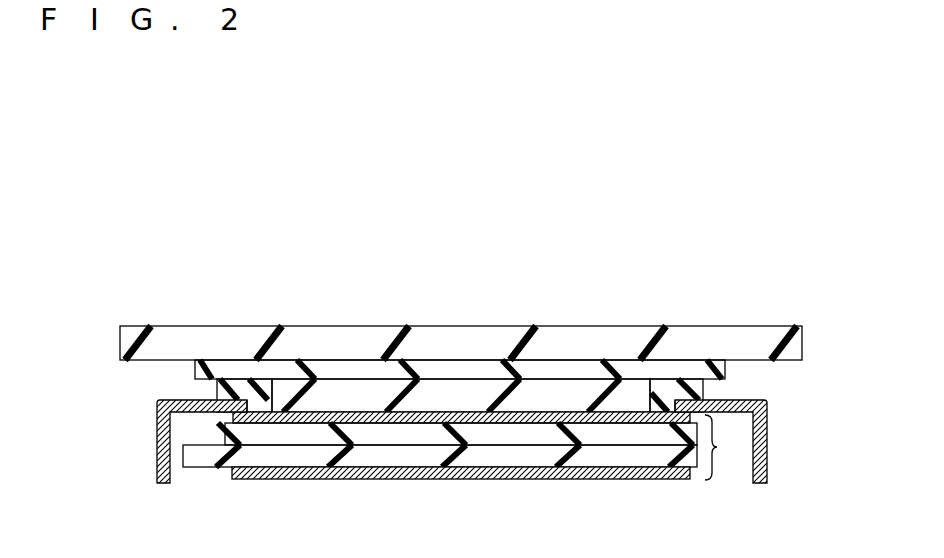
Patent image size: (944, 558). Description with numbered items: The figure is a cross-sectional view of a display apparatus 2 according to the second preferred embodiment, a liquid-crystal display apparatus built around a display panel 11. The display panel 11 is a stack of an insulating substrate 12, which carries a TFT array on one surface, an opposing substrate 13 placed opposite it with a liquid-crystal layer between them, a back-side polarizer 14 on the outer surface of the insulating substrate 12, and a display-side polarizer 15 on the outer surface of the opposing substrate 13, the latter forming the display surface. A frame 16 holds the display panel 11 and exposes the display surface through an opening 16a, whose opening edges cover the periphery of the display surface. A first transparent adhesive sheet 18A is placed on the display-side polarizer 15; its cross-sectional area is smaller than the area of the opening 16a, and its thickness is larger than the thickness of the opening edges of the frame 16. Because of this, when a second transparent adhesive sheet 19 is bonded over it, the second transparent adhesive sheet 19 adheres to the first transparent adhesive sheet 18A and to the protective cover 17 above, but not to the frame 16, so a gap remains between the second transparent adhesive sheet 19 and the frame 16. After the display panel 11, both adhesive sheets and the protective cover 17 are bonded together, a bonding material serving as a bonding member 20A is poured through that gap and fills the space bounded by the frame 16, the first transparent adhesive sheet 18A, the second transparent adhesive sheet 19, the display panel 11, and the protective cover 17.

The display apparatus 2 is at (492, 250).
The display panel 11 is at (723, 447).
The insulating substrate 12 is at (512, 456).
The opposing substrate 13 is at (398, 432).
The back-side polarizer 14 is at (643, 476).
The display-side polarizer 15 is at (300, 418).
The frame 16 is at (157, 452).
The opening 16a is at (258, 400).
The protective cover 17 is at (572, 343).
The first transparent adhesive sheet 18A is at (357, 400).
The second transparent adhesive sheet 19 is at (485, 370).
The bonding member 20A is at (263, 400).